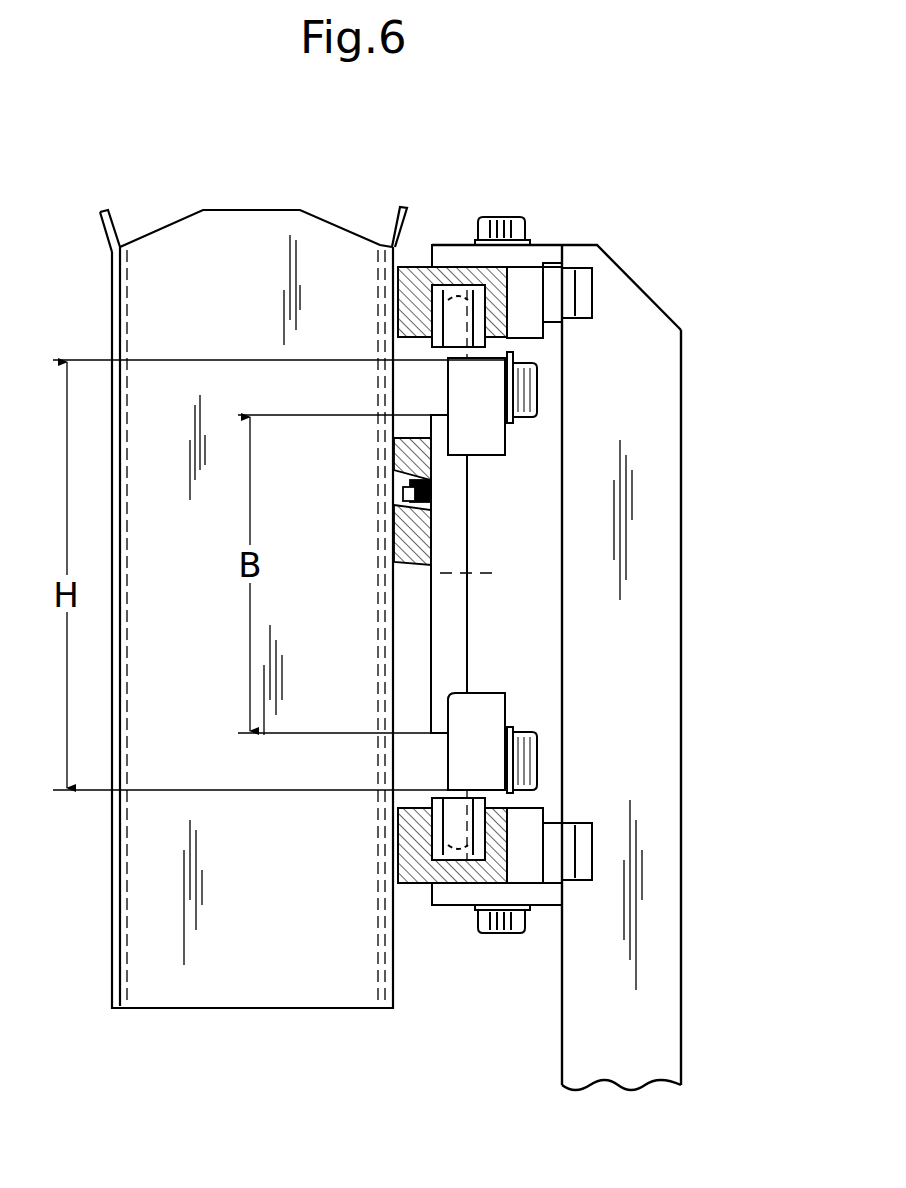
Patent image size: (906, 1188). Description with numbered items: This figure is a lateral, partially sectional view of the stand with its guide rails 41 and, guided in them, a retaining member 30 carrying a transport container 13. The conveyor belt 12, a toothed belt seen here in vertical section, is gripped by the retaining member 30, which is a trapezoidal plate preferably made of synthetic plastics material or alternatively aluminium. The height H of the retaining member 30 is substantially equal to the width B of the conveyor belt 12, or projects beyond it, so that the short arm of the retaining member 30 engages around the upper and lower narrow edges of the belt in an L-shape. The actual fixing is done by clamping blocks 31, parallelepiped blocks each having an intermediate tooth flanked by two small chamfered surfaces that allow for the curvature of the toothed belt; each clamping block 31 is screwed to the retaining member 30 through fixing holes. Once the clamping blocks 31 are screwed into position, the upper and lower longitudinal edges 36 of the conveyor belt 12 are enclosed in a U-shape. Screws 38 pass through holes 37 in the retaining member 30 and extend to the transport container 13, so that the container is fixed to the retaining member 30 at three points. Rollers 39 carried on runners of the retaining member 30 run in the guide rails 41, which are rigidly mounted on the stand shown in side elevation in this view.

The conveyor belt 12 is at (452, 515).
The transport container 13 is at (205, 242).
The retaining member 30 is at (418, 667).
The clamping block 31 is at (493, 433).
The longitudinal edges 36 is at (435, 735).
The holes 37 is at (430, 535).
The screws 38 is at (430, 478).
The rollers 39 is at (490, 268).
The guide rails 41 is at (413, 268).